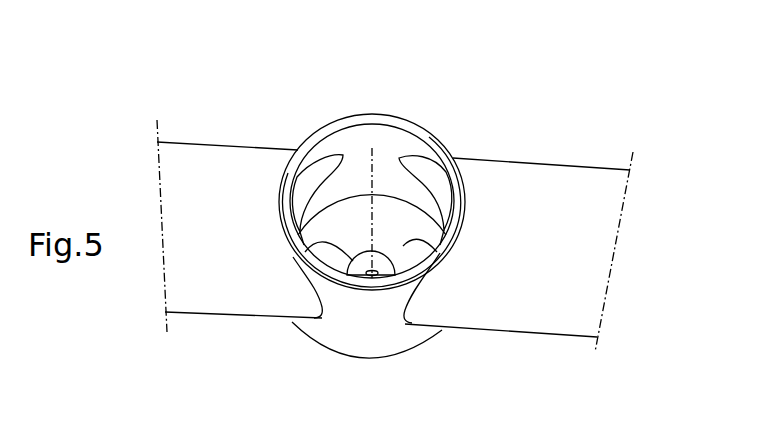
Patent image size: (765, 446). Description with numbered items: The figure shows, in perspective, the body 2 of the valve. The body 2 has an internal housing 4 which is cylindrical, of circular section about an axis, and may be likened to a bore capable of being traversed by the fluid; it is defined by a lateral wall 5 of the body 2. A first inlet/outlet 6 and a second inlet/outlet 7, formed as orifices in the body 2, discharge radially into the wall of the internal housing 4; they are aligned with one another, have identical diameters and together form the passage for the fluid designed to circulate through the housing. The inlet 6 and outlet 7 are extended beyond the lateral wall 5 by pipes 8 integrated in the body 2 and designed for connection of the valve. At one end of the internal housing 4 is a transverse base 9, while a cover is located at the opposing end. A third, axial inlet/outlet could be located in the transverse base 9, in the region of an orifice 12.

The body 2 is at (306, 340).
The internal housing 4 is at (383, 207).
The lateral wall 5 is at (355, 140).
The first inlet/outlet 6 is at (317, 175).
The second inlet/outlet 7 is at (427, 182).
The pipes 8 is at (197, 160).
The transverse base 9 is at (437, 252).
The orifice 12 is at (347, 258).